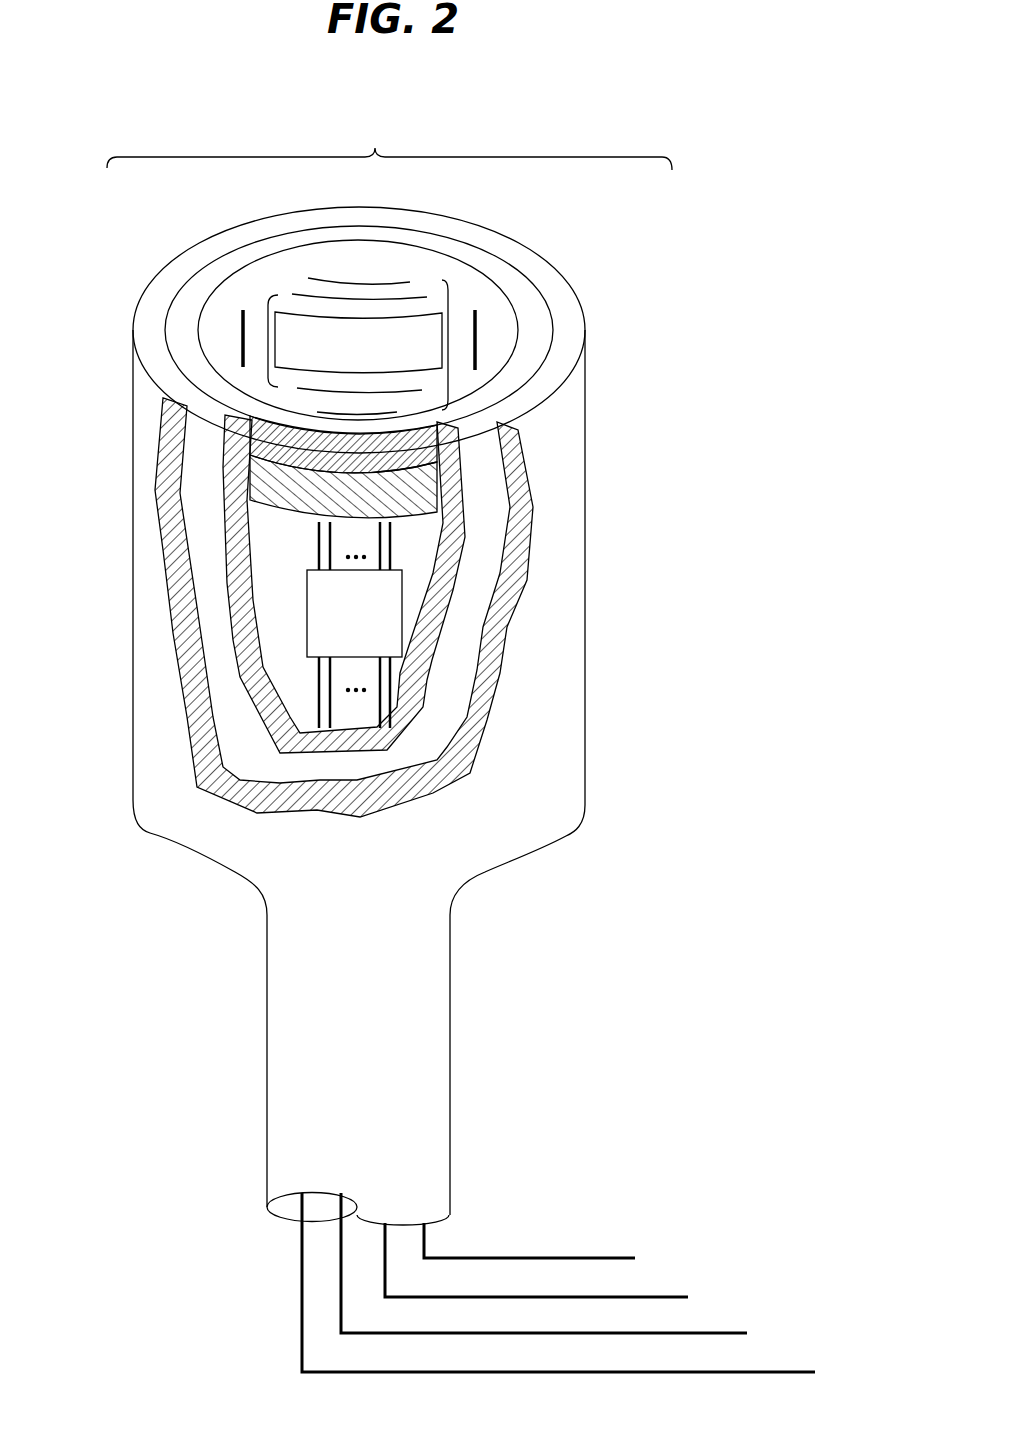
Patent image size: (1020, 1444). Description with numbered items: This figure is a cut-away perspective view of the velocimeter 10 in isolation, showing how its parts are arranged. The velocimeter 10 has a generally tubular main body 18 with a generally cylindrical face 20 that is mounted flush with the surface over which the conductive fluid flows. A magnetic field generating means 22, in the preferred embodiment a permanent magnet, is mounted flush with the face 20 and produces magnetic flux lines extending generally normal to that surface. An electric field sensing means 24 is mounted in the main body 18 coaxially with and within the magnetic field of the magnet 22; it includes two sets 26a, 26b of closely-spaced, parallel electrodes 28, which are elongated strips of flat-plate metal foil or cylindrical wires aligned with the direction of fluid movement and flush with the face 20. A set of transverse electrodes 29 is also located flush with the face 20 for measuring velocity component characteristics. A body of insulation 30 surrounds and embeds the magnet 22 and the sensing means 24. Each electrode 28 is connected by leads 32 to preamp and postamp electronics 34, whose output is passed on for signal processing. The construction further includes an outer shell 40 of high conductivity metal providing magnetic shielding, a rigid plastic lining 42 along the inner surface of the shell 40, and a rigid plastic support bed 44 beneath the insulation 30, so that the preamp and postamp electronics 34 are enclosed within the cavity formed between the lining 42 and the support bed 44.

The velocimeter 10 is at (186, 94).
The main body 18 is at (152, 840).
The face 20 is at (490, 377).
The magnetic field generating means 22 is at (322, 353).
The electric field sensing means 24 is at (389, 135).
The set of electrodes 26a is at (263, 344).
The set of electrodes 26b is at (453, 342).
The electrodes 28 is at (353, 282).
The transverse electrodes 29 is at (243, 335).
The body of insulation 30 is at (232, 432).
The leads 32 is at (327, 541).
The preamp and postamp electronics 34 is at (402, 607).
The outer shell 40 is at (480, 707).
The lining 42 is at (237, 648).
The support bed 44 is at (273, 500).